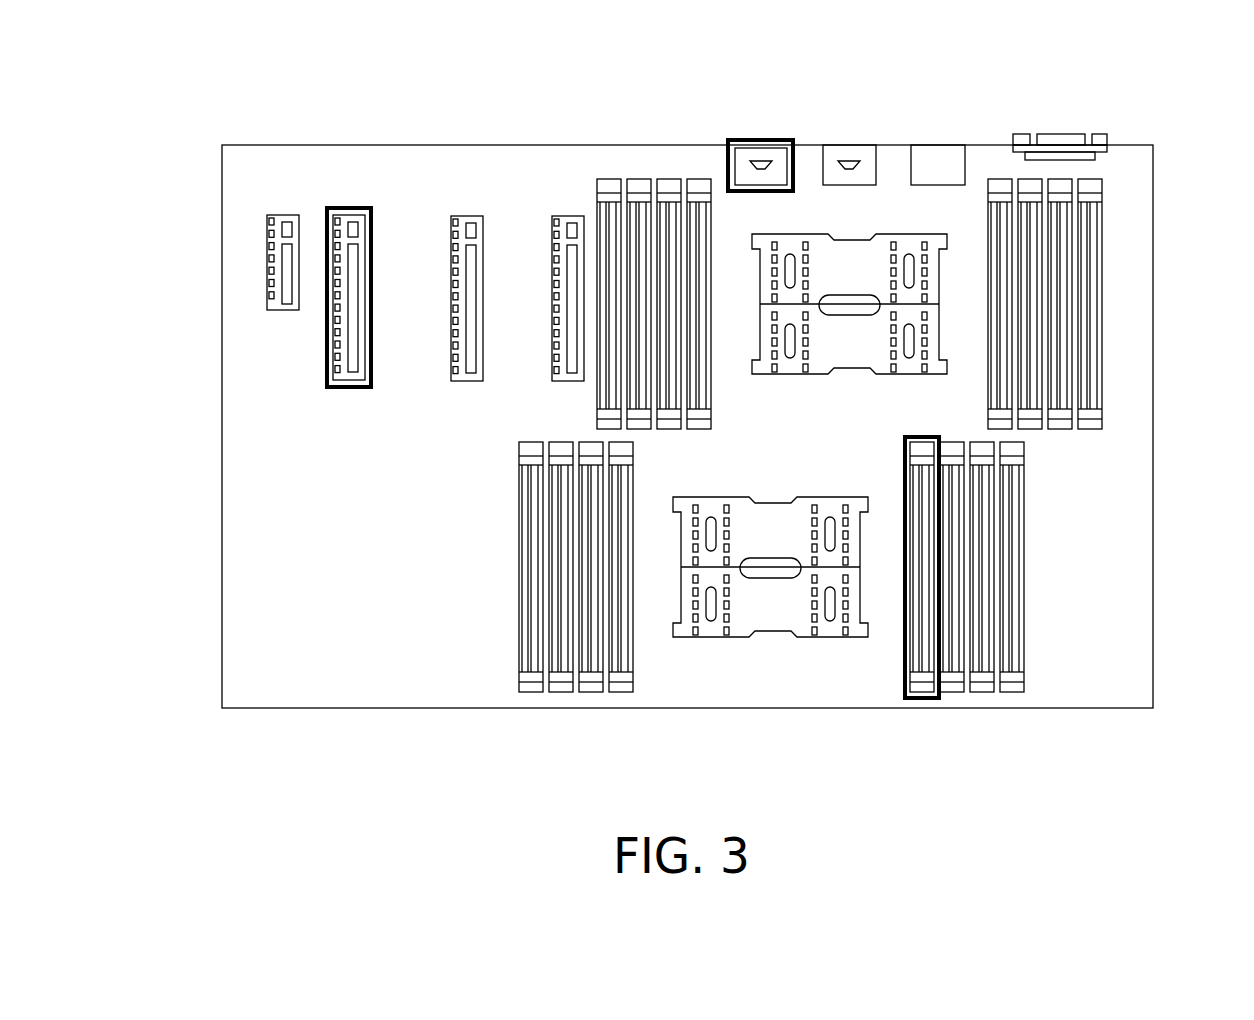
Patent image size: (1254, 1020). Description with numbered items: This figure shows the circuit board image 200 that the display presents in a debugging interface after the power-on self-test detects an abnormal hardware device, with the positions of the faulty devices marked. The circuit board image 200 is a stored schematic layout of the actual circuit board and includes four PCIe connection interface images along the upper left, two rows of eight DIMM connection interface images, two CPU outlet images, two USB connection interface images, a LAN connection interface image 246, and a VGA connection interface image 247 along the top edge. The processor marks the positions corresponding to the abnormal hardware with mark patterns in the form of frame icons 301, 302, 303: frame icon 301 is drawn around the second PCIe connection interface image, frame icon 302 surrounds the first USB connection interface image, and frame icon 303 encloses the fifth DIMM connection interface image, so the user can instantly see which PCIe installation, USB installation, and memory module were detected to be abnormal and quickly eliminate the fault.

The circuit board image 200 is at (222, 112).
The LAN connection interface image 246 is at (930, 145).
The VGA connection interface image 247 is at (1068, 140).
The frame icon 301 is at (348, 389).
The frame icon 302 is at (773, 193).
The frame icon 303 is at (920, 436).